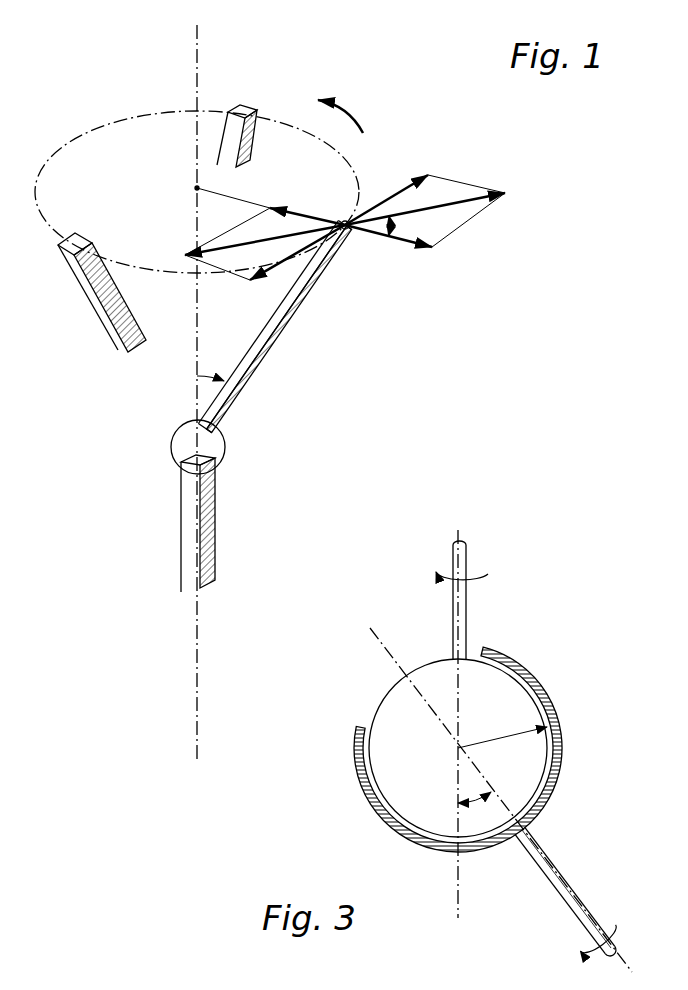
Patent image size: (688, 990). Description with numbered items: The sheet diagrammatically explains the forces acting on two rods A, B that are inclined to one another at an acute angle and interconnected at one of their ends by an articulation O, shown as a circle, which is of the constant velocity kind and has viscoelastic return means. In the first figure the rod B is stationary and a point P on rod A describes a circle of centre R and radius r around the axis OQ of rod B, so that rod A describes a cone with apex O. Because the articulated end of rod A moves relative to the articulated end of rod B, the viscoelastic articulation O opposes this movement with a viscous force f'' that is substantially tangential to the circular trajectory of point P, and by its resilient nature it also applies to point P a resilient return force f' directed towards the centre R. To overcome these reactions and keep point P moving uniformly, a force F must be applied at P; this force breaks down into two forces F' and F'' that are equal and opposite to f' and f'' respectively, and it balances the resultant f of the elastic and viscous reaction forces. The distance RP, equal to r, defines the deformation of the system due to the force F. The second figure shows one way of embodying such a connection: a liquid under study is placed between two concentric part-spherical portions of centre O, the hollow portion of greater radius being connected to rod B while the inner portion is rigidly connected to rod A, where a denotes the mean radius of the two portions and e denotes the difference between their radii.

In FIG. 1, the axis OQ end point Q is at (209, 389).
In FIG. 1, the centre of circle R is at (197, 192).
In FIG. 1, the radius of circle r is at (233, 188).
In FIG. 1, the resilient return force f' is at (303, 199).
In FIG. 1, the resultant reaction force f is at (254, 244).
In FIG. 1, the viscous force f'' is at (288, 265).
In FIG. 1, the force component F'' is at (425, 183).
In FIG. 1, the applied force F is at (434, 202).
In FIG. 1, the force component F' is at (425, 231).
In FIG. 1, the point on rod A P is at (352, 240).
In FIG. 1, the rod A is at (274, 327).
In FIG. 3, the rod A is at (472, 593).
In FIG. 1, the rod B is at (212, 523).
In FIG. 3, the rod B is at (565, 891).
In FIG. 1, the articulation O is at (183, 447).
In FIG. 3, the articulation O is at (458, 748).
In FIG. 3, the difference between radii e is at (522, 703).
In FIG. 3, the mean radius a is at (502, 731).